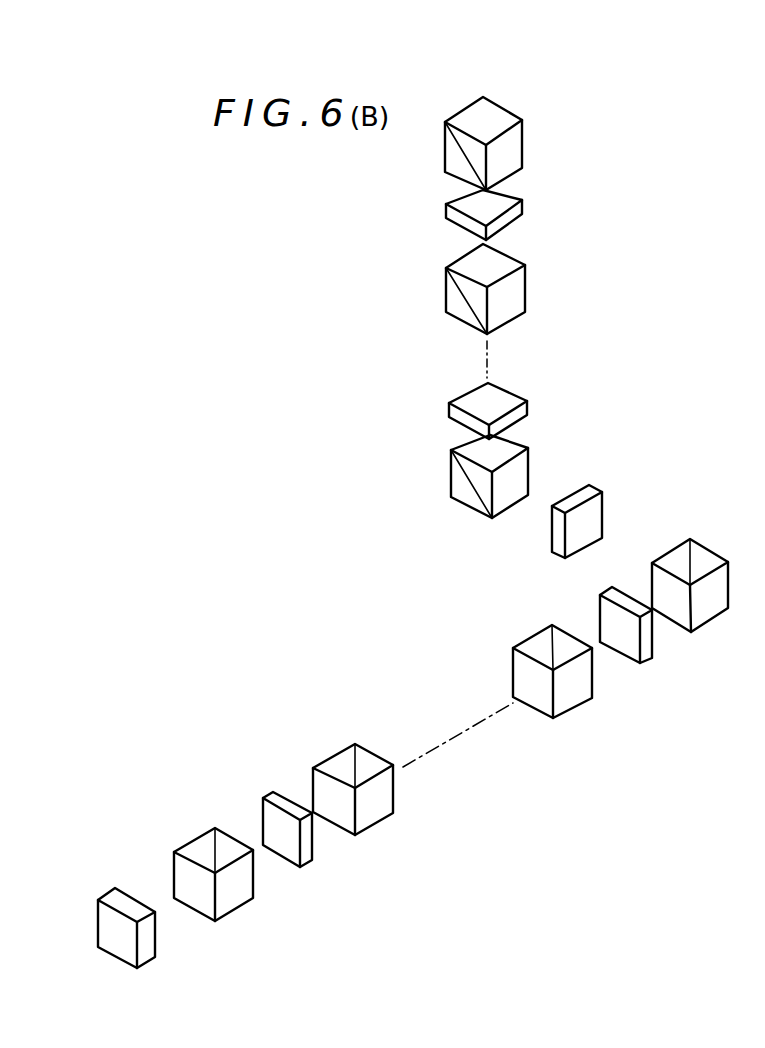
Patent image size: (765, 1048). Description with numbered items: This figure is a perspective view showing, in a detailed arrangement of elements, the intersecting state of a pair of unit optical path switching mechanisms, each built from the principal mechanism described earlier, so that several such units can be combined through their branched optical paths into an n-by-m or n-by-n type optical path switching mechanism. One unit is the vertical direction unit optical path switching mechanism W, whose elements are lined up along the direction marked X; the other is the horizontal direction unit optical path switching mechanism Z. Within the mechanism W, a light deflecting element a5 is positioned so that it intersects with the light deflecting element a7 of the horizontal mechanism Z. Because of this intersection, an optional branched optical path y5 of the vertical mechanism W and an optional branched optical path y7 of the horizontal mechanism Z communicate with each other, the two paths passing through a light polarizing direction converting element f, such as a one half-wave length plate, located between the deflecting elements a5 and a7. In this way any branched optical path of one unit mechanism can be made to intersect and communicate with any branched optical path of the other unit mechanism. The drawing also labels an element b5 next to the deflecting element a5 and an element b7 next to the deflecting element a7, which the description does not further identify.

The X axis (light propagation direction) X is at (494, 123).
The vertical direction unit optical path switching mechanism W is at (520, 180).
The wave plate b5 is at (452, 412).
The light deflecting element a5 is at (452, 461).
The branched optical path y5 is at (500, 487).
The light polarizing direction converting element f is at (586, 490).
The branched optical path y7 is at (575, 530).
The light deflecting element a7 is at (707, 622).
The wave plate b7 is at (655, 650).
The horizontal direction unit optical path switching mechanism Z is at (235, 818).